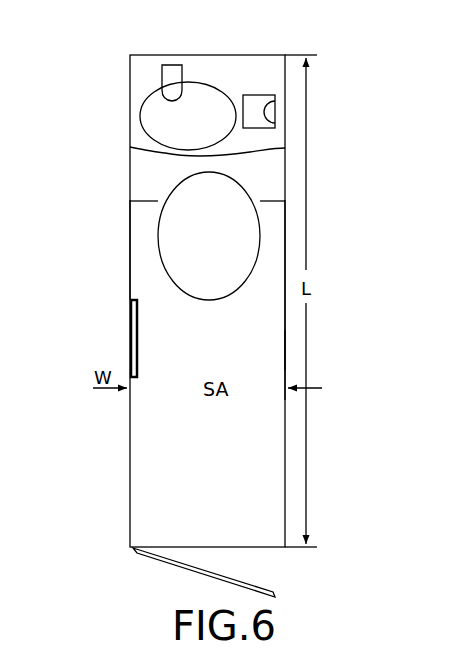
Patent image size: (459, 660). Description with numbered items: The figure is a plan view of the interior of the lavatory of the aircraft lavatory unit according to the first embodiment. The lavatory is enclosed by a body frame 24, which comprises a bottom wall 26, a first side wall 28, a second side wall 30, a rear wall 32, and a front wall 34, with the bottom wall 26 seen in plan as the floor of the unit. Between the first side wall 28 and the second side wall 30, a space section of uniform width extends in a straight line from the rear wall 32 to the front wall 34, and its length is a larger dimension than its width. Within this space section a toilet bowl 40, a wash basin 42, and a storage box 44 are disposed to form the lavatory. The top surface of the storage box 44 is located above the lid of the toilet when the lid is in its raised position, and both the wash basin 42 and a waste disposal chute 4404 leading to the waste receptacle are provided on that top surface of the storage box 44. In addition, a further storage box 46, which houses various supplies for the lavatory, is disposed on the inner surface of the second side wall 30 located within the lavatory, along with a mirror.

The body frame 24 is at (120, 174).
The bottom wall 26 is at (255, 348).
The first side wall 28 is at (287, 320).
The second side wall 30 is at (130, 253).
The rear wall 32 is at (207, 55).
The front wall 34 is at (255, 548).
The toilet bowl 40 is at (272, 228).
The wash basin 42 is at (152, 81).
The storage box 44 is at (167, 152).
The waste disposal chute 4404 is at (276, 126).
The storage box 46 is at (130, 348).